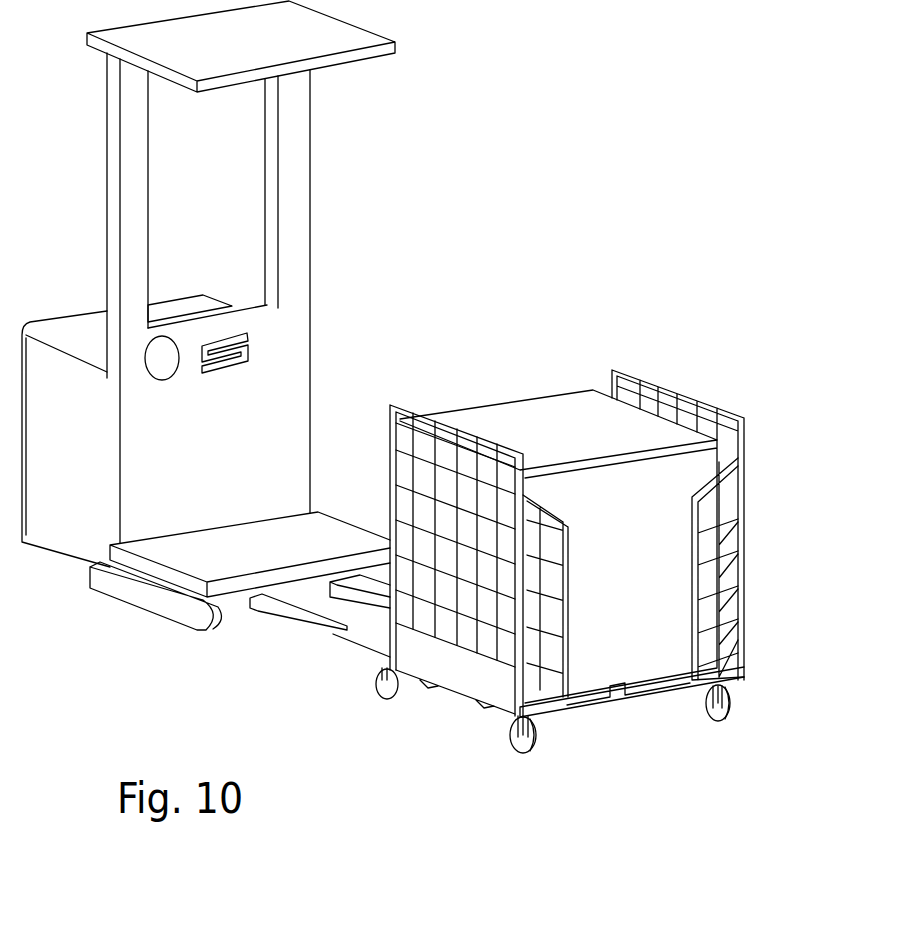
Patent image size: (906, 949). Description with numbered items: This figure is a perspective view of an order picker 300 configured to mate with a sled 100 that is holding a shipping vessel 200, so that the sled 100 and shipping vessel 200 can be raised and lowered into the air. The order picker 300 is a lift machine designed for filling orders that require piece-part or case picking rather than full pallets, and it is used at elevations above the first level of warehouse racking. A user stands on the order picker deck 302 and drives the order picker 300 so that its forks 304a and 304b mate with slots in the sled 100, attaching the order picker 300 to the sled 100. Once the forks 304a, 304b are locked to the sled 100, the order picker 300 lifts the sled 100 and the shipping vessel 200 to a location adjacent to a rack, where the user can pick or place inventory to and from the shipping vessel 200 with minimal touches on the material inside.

The sled 100 is at (758, 478).
The shipping vessel 200 is at (522, 388).
The order picker 300 is at (385, 105).
The order picker deck 302 is at (325, 510).
The fork 304a is at (248, 608).
The fork 304b is at (373, 595).